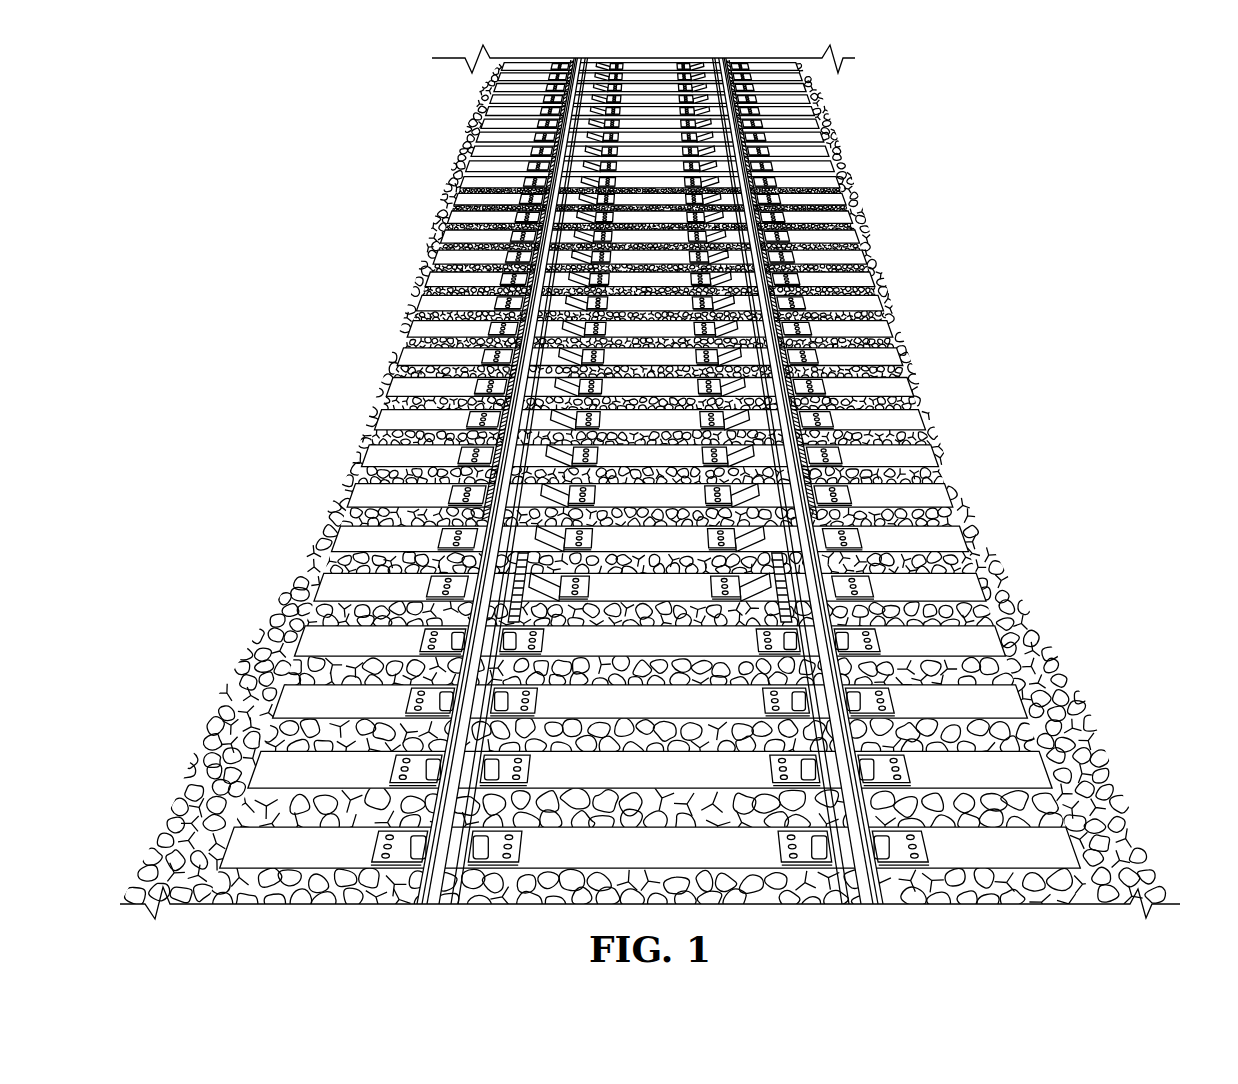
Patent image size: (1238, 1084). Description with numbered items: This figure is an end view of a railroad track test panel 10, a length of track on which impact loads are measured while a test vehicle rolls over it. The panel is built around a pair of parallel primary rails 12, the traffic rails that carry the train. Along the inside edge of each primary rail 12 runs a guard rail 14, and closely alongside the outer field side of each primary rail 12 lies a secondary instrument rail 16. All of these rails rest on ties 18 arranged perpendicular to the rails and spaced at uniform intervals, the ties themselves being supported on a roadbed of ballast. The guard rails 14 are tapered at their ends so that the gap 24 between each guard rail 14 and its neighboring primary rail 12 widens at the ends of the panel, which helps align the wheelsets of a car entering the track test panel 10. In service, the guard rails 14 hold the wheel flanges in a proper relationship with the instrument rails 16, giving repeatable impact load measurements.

The track test panel 10 is at (1003, 190).
The primary rail 12 is at (472, 660).
The guard rail 14 is at (582, 326).
The instrument rail 16 is at (512, 341).
The tie 18 is at (1068, 849).
The gap 24 is at (513, 604).